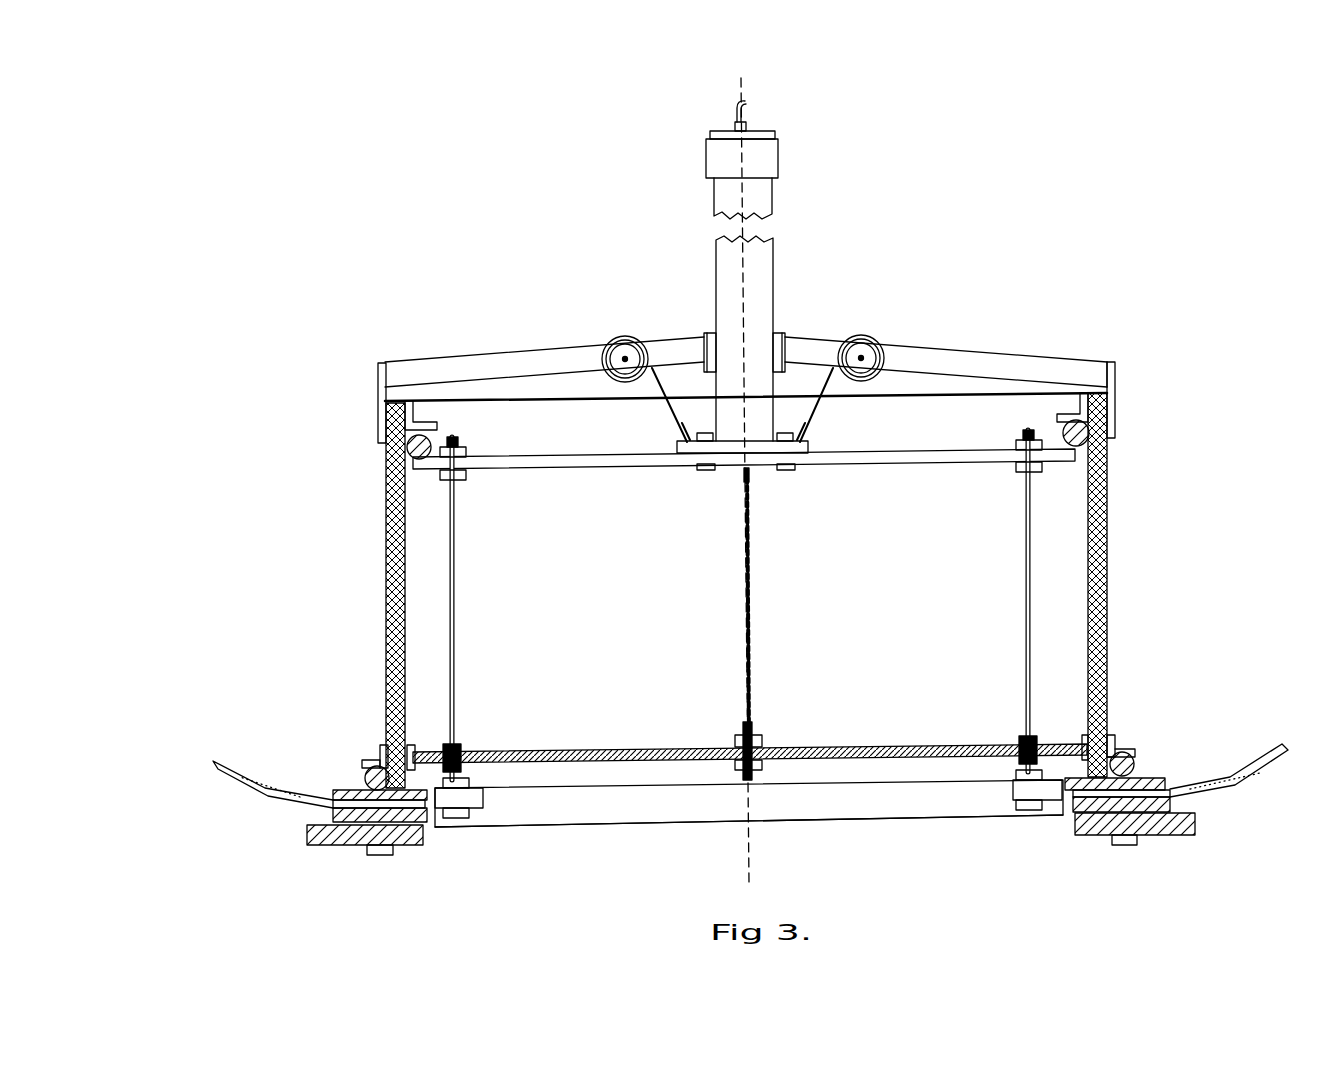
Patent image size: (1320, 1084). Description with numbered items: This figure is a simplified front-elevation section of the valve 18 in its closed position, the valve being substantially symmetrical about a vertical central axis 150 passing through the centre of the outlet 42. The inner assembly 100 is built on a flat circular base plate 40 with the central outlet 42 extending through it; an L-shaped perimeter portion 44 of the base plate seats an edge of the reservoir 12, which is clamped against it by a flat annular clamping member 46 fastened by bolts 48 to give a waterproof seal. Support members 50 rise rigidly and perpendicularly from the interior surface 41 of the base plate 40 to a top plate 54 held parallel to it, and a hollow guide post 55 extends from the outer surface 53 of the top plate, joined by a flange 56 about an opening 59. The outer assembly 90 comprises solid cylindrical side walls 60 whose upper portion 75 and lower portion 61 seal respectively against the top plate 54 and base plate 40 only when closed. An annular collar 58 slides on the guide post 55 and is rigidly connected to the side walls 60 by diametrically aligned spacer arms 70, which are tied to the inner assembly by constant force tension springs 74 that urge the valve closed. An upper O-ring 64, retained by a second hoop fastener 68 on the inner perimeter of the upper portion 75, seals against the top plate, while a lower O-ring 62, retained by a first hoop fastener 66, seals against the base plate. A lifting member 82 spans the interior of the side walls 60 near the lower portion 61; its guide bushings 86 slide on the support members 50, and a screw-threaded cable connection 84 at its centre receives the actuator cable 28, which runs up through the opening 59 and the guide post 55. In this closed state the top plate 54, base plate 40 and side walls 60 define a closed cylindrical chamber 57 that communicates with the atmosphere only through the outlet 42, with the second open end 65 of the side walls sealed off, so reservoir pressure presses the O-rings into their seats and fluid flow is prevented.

The reservoir 12 is at (282, 791).
The valve 18 is at (1078, 278).
The actuator cable 28 is at (756, 604).
The base plate 40 is at (680, 820).
The interior surface 41 is at (1020, 812).
The outlet 42 is at (572, 824).
The perimeter portion 44 is at (437, 830).
The clamping member 46 is at (352, 847).
The bolts 48 is at (379, 858).
The support members 50 is at (462, 666).
The outer surface 53 is at (869, 447).
The top plate 54 is at (568, 472).
The guide post 55 is at (780, 273).
The flange 56 is at (818, 441).
The cylindrical chamber 57 is at (887, 526).
The annular collar 58 is at (704, 328).
The opening 59 is at (742, 474).
The side walls 60 is at (1114, 630).
The lower portion 61 is at (1142, 731).
The lower O-ring 62 is at (1142, 762).
The upper O-ring 64 is at (1053, 428).
The second open end 65 is at (1075, 768).
The first hoop fastener 66 is at (1117, 730).
The second hoop fastener 68 is at (425, 420).
The spacer arms 70 is at (503, 352).
The constant force tension springs 74 is at (873, 328).
The upper portion 75 is at (1097, 396).
The lifting member 82 is at (630, 742).
The cable connection 84 is at (735, 728).
The guide bushings 86 is at (470, 746).
The outer assembly 90 is at (1162, 420).
The inner assembly 100 is at (1070, 552).
The central axis 150 is at (760, 858).